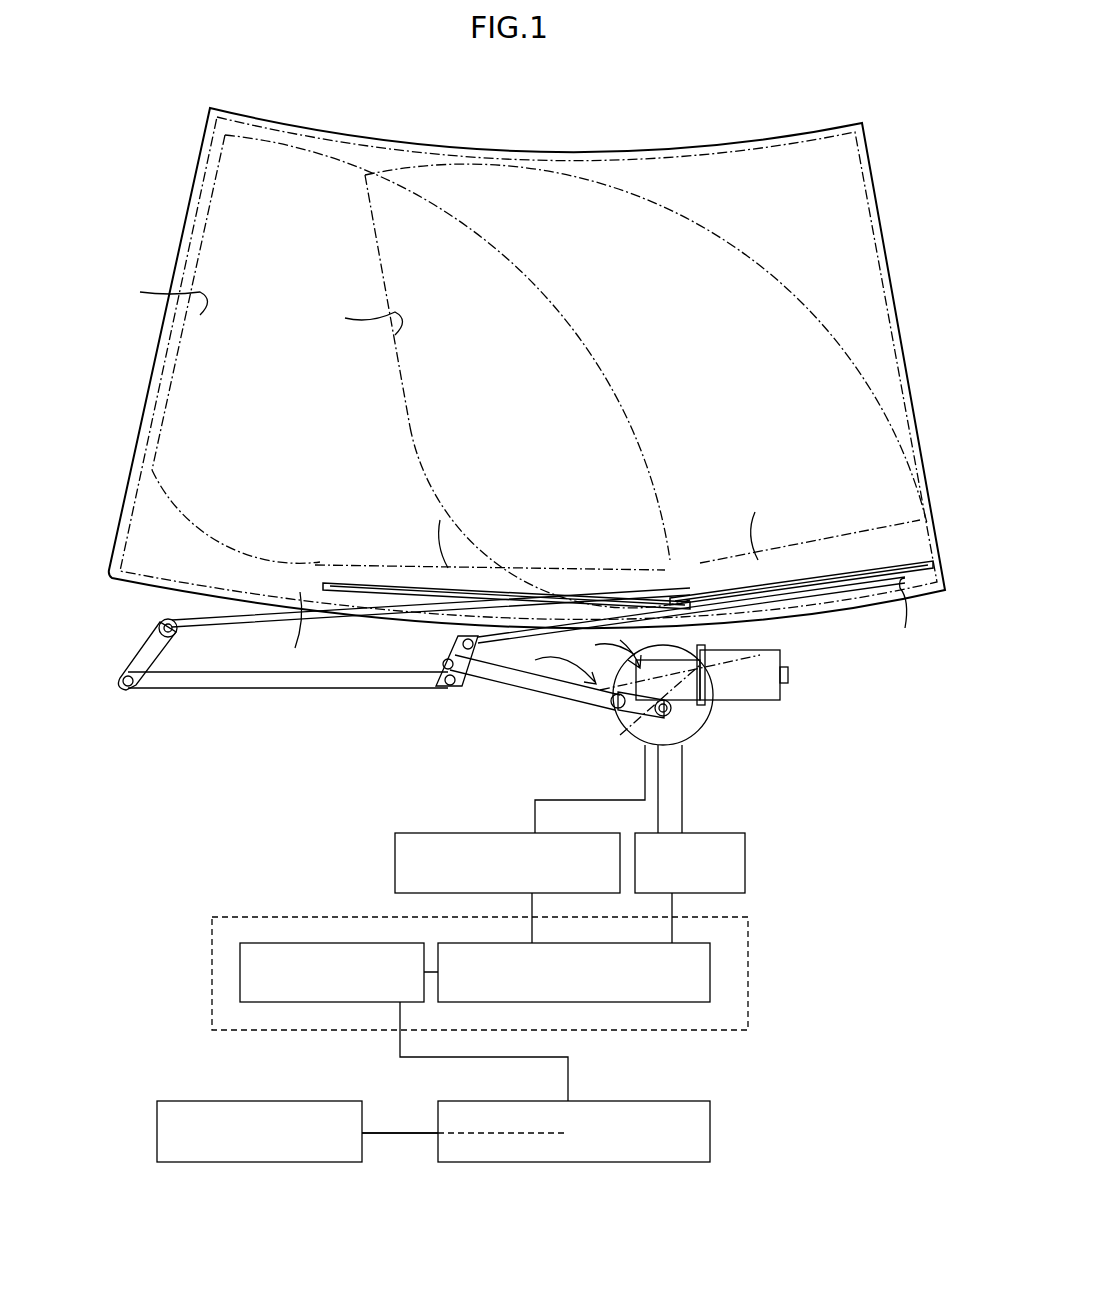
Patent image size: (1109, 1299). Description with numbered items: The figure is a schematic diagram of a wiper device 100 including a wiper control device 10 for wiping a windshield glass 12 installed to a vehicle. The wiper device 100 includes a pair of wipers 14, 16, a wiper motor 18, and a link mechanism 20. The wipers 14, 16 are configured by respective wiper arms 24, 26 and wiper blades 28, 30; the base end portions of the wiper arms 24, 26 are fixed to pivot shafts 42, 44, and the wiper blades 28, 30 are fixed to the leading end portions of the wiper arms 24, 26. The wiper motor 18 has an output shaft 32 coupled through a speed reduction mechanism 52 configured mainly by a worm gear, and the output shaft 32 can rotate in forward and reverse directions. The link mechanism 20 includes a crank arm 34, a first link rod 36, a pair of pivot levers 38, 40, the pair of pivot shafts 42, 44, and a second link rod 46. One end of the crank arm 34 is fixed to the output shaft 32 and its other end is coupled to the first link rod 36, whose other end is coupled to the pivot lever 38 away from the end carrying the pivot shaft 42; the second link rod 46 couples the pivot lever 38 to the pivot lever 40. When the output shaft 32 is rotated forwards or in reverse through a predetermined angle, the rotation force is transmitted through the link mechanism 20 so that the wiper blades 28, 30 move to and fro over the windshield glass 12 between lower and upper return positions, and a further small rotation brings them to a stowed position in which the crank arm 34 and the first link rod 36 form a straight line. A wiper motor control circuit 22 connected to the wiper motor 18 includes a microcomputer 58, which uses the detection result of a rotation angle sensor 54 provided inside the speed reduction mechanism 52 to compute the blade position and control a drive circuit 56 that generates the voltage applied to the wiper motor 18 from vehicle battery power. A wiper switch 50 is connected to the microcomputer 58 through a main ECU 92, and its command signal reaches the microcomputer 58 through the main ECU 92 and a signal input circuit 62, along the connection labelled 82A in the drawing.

The wiper device 100 is at (535, 403).
The windshield glass 12 is at (565, 150).
The wiper control device 10 is at (506, 826).
The link mechanism 20 is at (506, 626).
The wiper 14 is at (801, 530).
The wiper 16 is at (506, 543).
The wiper arm 24 is at (690, 588).
The wiper arm 26 is at (195, 625).
The wiper blade 28 is at (835, 578).
The wiper blade 30 is at (525, 590).
The wiper motor 18 is at (748, 705).
The output shaft 32 is at (690, 735).
The crank arm 34 is at (610, 715).
The first link rod 36 is at (505, 685).
The pivot lever 38 is at (442, 665).
The pivot lever 40 is at (140, 652).
The pivot shaft 42 is at (455, 645).
The pivot shaft 44 is at (158, 625).
The second link rod 46 is at (250, 690).
The speed reduction mechanism 52 is at (700, 710).
The rotation angle sensor 54 is at (394, 862).
The drive circuit 56 is at (746, 857).
The microcomputer 58 is at (712, 972).
The signal input circuit 62 is at (239, 968).
The wiper motor control circuit 22 is at (750, 937).
The wiper switch 50 is at (156, 1130).
The main electronic control unit (ECU) 92 is at (712, 1133).
The signal line from wiper switch 82A is at (402, 1135).